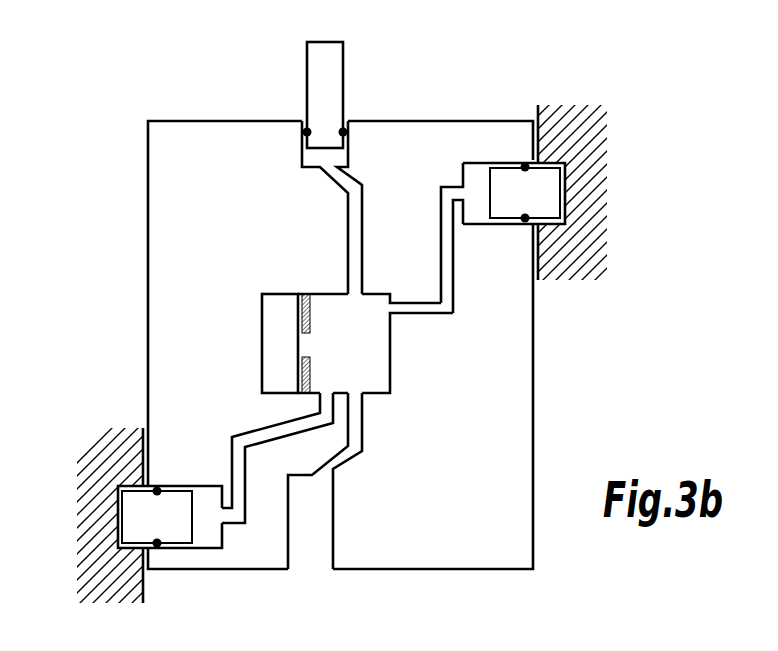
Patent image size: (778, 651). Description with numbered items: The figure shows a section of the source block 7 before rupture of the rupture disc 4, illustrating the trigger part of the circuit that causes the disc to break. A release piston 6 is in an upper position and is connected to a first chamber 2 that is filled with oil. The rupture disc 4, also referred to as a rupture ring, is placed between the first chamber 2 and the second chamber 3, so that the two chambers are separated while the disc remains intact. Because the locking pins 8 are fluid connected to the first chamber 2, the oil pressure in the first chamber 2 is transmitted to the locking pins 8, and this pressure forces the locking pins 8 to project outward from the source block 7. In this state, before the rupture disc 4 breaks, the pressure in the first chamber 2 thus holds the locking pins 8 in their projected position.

The source block 7 is at (204, 75).
The release piston 6 is at (330, 82).
The second chamber 3 is at (272, 348).
The rupture disc 4 is at (303, 343).
The first chamber 2 is at (370, 368).
The locking pin 8 is at (545, 188).